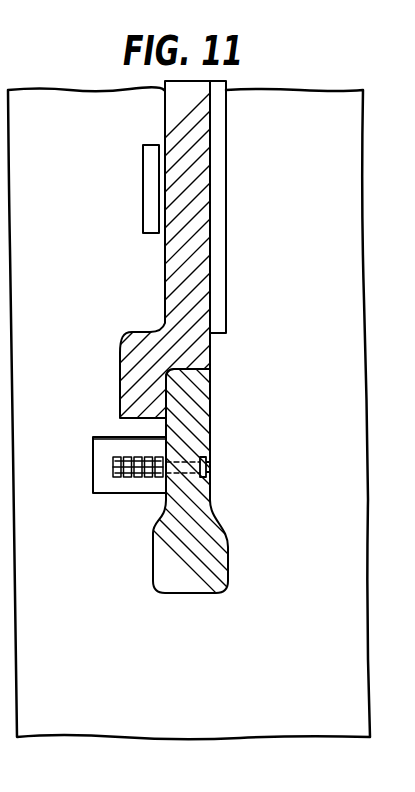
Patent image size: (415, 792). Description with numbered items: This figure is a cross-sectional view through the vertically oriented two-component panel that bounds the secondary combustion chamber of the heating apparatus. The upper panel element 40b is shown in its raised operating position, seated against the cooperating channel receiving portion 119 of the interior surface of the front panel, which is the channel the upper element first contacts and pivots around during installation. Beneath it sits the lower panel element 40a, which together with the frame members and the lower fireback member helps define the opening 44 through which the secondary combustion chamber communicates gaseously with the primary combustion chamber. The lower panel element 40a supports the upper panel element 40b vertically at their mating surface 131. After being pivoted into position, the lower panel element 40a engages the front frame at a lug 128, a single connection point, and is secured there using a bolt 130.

The lower panel element 40a is at (229, 560).
The upper panel element 40b is at (211, 192).
The opening 44 is at (198, 672).
The cooperating channel receiving portion 119 is at (144, 177).
The lug 128 is at (130, 495).
The bolt 130 is at (208, 477).
The mating surface 131 is at (205, 367).